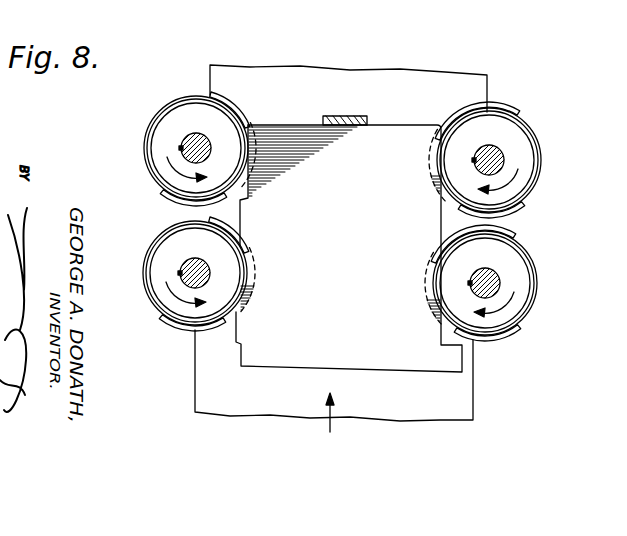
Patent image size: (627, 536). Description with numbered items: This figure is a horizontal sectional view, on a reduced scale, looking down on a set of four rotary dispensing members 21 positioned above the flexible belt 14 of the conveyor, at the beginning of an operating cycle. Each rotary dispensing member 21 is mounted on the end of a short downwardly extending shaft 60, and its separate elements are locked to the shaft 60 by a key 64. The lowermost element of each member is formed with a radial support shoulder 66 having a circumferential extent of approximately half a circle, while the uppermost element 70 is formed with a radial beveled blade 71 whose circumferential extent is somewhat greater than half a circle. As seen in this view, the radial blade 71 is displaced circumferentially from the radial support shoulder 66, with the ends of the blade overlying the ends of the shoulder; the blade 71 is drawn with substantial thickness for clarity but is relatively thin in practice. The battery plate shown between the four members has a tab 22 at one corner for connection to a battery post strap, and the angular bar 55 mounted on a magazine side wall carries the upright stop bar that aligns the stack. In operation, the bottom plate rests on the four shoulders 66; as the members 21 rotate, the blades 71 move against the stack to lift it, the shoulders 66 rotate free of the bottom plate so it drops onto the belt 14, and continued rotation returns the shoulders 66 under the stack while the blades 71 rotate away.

The flexible belt 14 is at (382, 82).
The rotary dispensing member 21 is at (342, 223).
The tab 22 is at (455, 367).
The angular bar 55 is at (340, 116).
The shaft 60 is at (190, 142).
The key 64 is at (180, 148).
The radial support shoulder 66 is at (243, 110).
The uppermost element 70 is at (187, 113).
The radial beveled blade 71 is at (145, 157).